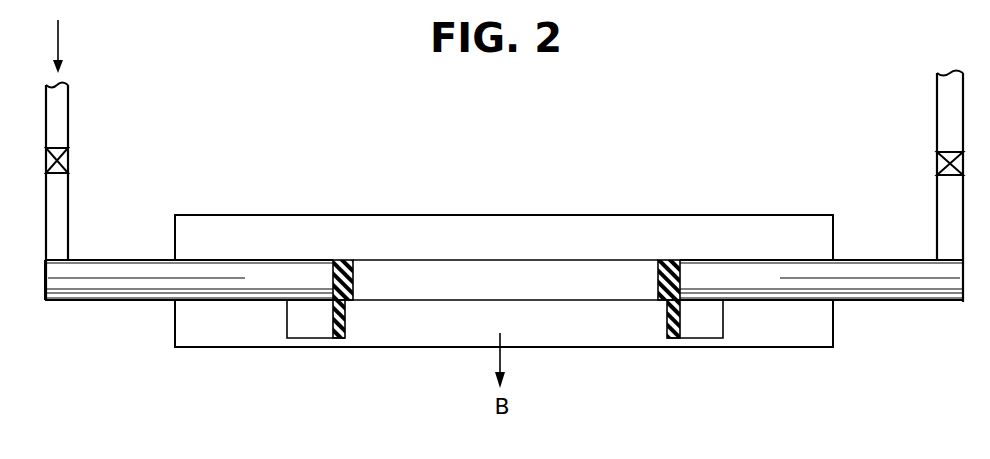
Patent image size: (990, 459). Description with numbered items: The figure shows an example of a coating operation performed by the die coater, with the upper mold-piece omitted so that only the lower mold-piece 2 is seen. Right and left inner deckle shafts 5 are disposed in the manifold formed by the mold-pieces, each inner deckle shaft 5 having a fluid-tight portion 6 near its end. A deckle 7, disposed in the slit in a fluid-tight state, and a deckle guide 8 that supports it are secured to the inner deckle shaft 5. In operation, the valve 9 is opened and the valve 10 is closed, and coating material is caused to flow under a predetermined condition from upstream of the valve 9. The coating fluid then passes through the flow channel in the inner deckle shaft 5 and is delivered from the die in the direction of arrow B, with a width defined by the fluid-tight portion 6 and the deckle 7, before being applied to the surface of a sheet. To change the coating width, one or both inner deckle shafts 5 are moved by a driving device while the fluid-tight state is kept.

The lower mold-piece 2 is at (489, 233).
The inner deckle shaft 5 is at (222, 270).
The fluid-tight portion 6 is at (358, 266).
The deckle 7 is at (338, 347).
The deckle guide 8 is at (308, 326).
The valve 9 is at (72, 164).
The valve 10 is at (935, 166).